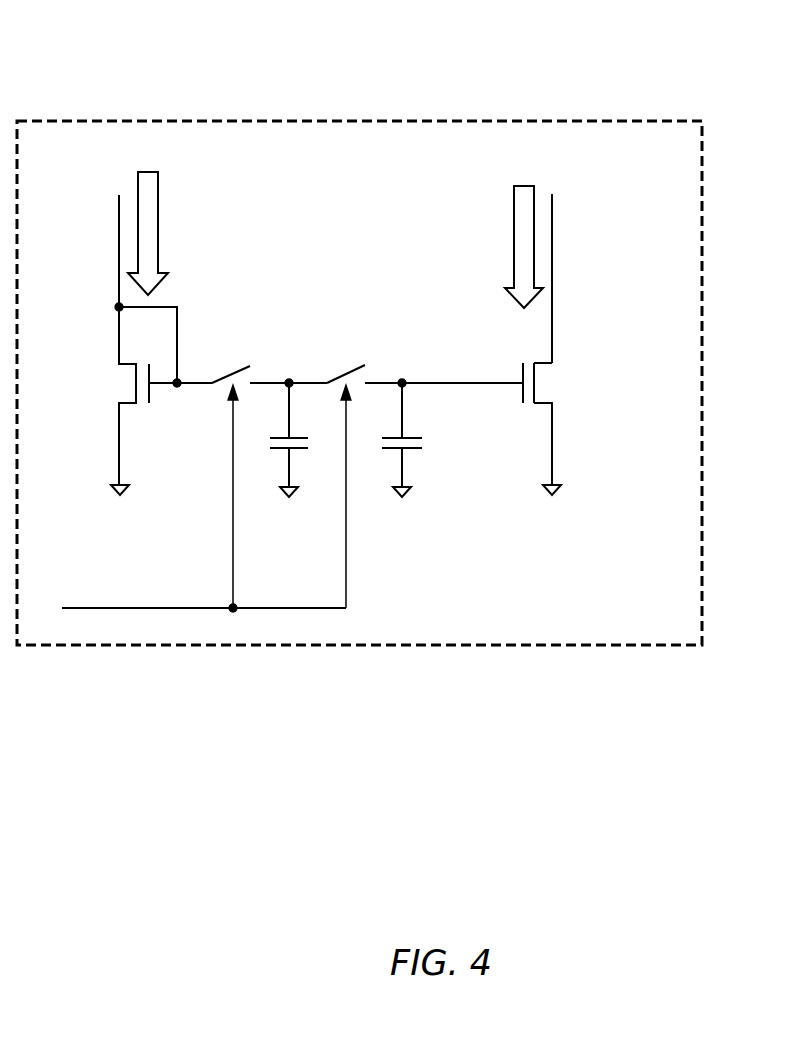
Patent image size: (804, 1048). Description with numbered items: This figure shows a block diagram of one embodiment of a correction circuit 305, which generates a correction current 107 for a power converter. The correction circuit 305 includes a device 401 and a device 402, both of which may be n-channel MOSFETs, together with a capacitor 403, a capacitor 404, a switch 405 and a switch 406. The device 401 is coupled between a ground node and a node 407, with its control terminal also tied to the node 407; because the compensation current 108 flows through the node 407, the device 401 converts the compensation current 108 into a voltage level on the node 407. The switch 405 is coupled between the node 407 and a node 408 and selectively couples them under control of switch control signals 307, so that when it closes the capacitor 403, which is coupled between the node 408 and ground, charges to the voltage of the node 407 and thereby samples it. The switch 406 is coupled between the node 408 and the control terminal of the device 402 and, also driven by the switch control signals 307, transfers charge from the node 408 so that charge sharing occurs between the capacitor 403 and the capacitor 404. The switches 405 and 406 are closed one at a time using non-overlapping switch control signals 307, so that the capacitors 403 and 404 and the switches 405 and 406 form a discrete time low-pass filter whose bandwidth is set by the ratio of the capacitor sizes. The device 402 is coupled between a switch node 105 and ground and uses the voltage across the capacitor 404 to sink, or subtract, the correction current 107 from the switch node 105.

The correction circuit 305 is at (415, 120).
The node 407 is at (120, 251).
The compensation current 108 is at (168, 211).
The correction current 107 is at (512, 235).
The switch node 105 is at (553, 231).
The device 401 is at (128, 383).
The device 402 is at (548, 384).
The switch 405 is at (237, 361).
The switch 406 is at (350, 363).
The node 408 is at (289, 380).
The capacitor 403 is at (305, 453).
The capacitor 404 is at (418, 453).
The switch control signals 307 is at (206, 509).